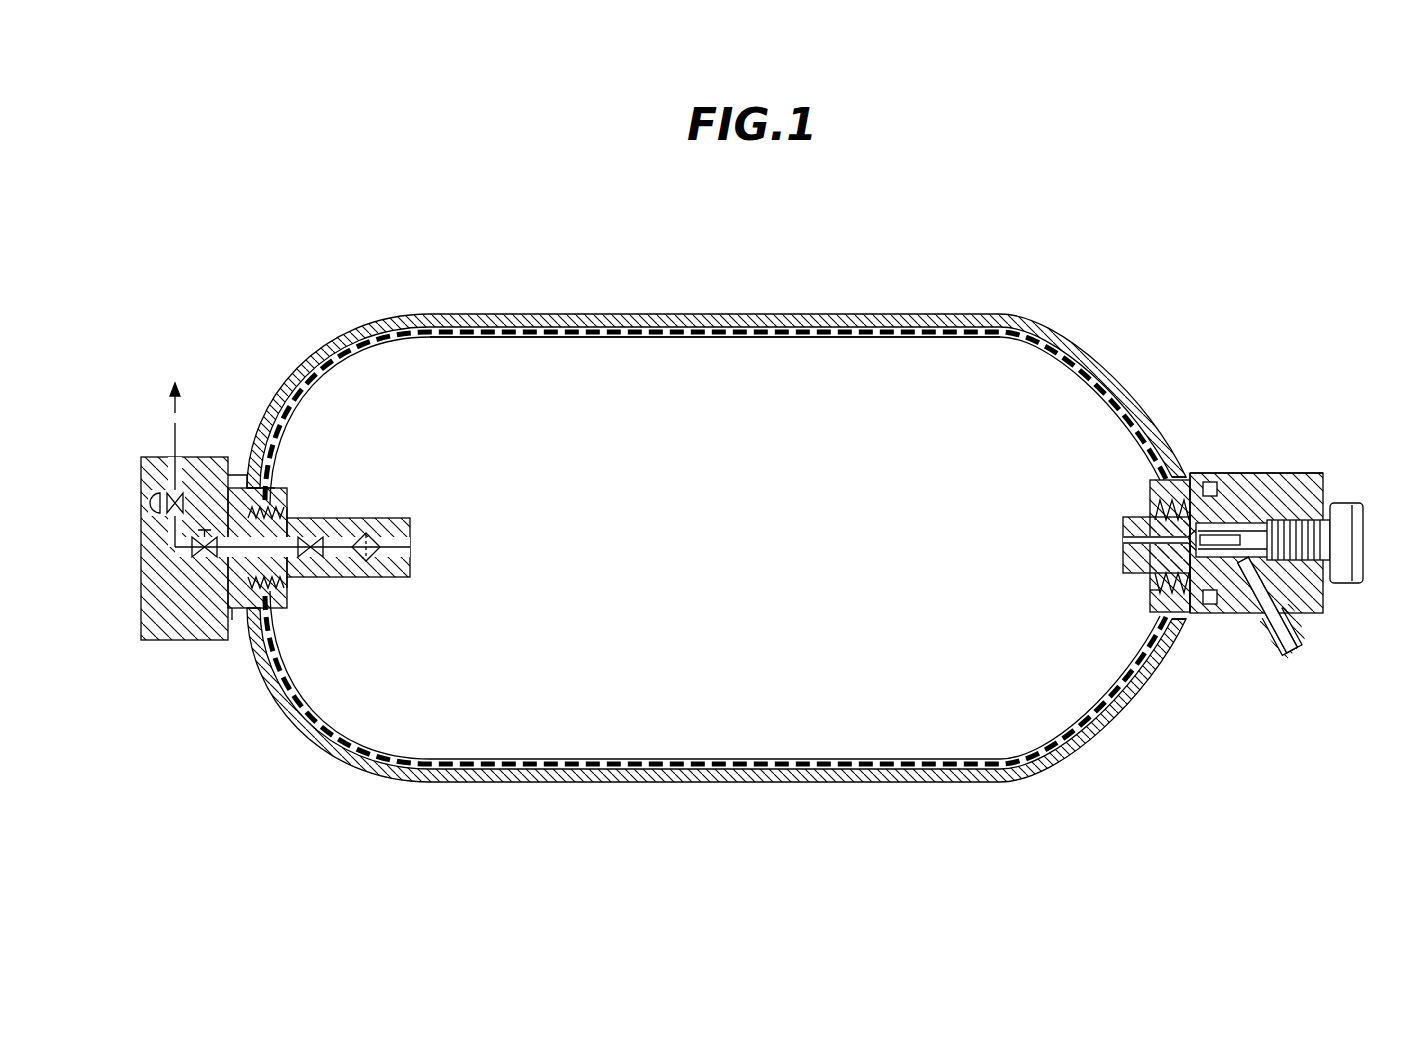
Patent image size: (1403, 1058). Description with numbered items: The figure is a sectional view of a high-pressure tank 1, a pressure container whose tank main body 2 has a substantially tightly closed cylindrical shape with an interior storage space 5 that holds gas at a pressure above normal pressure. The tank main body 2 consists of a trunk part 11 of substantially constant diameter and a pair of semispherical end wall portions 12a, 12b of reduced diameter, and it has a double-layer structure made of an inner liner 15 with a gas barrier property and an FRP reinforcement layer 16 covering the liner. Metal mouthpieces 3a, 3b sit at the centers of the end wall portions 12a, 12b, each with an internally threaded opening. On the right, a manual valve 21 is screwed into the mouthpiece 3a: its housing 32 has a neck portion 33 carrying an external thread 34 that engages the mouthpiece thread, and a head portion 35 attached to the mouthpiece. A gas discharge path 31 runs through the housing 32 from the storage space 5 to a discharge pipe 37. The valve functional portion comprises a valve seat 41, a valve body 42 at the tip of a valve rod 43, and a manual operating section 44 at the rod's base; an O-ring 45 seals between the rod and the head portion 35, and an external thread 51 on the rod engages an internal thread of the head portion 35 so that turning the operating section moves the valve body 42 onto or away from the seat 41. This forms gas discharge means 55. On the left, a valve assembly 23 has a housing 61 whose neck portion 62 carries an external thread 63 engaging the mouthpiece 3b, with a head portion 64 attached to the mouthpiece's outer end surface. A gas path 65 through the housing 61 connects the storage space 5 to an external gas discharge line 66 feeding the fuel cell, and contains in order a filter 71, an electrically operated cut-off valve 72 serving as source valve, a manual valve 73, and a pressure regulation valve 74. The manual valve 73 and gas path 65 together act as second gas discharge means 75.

The high-pressure tank 1 is at (707, 520).
The tank main body 2 is at (716, 520).
The mouthpiece 3a is at (1150, 590).
The mouthpiece 3b is at (232, 620).
The storage space 5 is at (746, 568).
The trunk part 11 is at (655, 314).
The end wall portion 12a is at (1168, 430).
The end wall portion 12b is at (258, 436).
The liner 15 is at (548, 340).
The reinforcement layer 16 is at (560, 315).
The manual valve 21 is at (1221, 562).
The valve assembly 23 is at (244, 544).
The gas discharge path 31 is at (1160, 565).
The housing 32 is at (1317, 490).
The neck portion 33 is at (1128, 528).
The external thread 34 is at (1130, 545).
The head portion 35 is at (1281, 473).
The discharge pipe 37 is at (1278, 638).
The valve seat 41 is at (1190, 480).
The valve body 42 is at (1205, 604).
The valve rod 43 is at (1240, 540).
The manual operating section 44 is at (1350, 583).
The O-ring 45 is at (1312, 613).
The external thread 51 is at (1327, 507).
The gas discharge means 55 is at (1297, 680).
The housing 61 is at (180, 641).
The neck portion 62 is at (355, 578).
The external thread 63 is at (292, 520).
The head portion 64 is at (143, 540).
The gas path 65 is at (400, 540).
The gas discharge line 66 is at (175, 433).
The filter 71 is at (372, 562).
The cut-off valve 72 is at (310, 570).
The manual valve 73 is at (192, 548).
The pressure regulation valve 74 is at (150, 503).
The second gas discharge means 75 is at (110, 631).